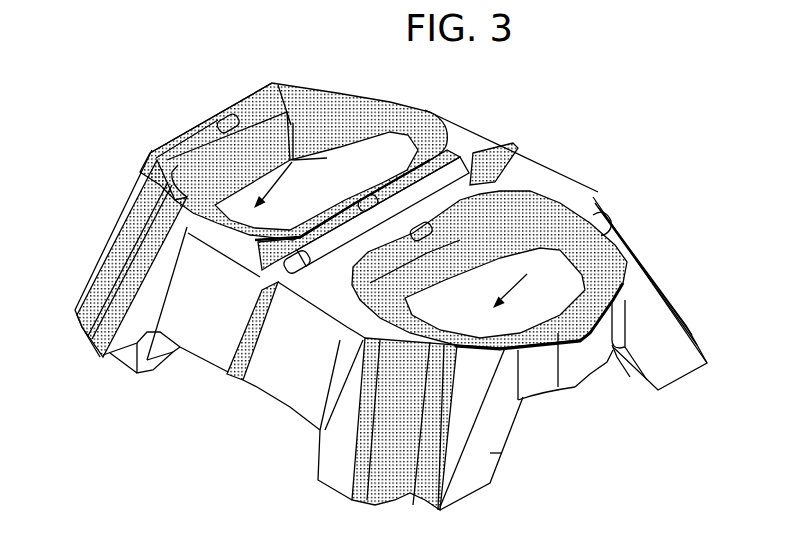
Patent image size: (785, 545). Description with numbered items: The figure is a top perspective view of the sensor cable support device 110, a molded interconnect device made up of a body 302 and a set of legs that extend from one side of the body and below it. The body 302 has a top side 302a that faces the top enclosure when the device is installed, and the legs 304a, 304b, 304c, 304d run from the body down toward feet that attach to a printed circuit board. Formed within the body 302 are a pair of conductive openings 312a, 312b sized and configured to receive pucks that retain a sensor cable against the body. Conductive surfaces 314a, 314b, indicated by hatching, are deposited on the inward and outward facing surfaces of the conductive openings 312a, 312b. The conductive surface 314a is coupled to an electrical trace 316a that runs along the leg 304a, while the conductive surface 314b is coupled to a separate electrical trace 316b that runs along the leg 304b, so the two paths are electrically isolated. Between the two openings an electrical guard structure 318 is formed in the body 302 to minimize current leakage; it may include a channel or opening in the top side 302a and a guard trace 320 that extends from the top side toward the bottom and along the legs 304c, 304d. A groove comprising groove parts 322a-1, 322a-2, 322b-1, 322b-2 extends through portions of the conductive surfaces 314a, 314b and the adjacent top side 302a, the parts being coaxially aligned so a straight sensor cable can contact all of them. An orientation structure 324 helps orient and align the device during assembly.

The sensor cable support device 110 is at (606, 127).
The body 302 is at (470, 137).
The top side 302a is at (560, 177).
The leg 304a is at (128, 370).
The leg 304b is at (503, 455).
The leg 304c is at (672, 367).
The leg 304d is at (283, 100).
The conductive opening 312a is at (205, 122).
The conductive opening 312b is at (625, 260).
The conductive surface 314a is at (150, 153).
The conductive surface 314b is at (593, 196).
The electrical trace 316a is at (98, 297).
The electrical trace 316b is at (440, 485).
The electrical guard structure 318 is at (305, 262).
The guard trace 320 is at (495, 172).
The groove part 322a-1 is at (217, 118).
The groove part 322a-2 is at (372, 195).
The groove part 322b-1 is at (607, 342).
The groove part 322b-2 is at (430, 225).
The orientation structure 324 is at (583, 373).